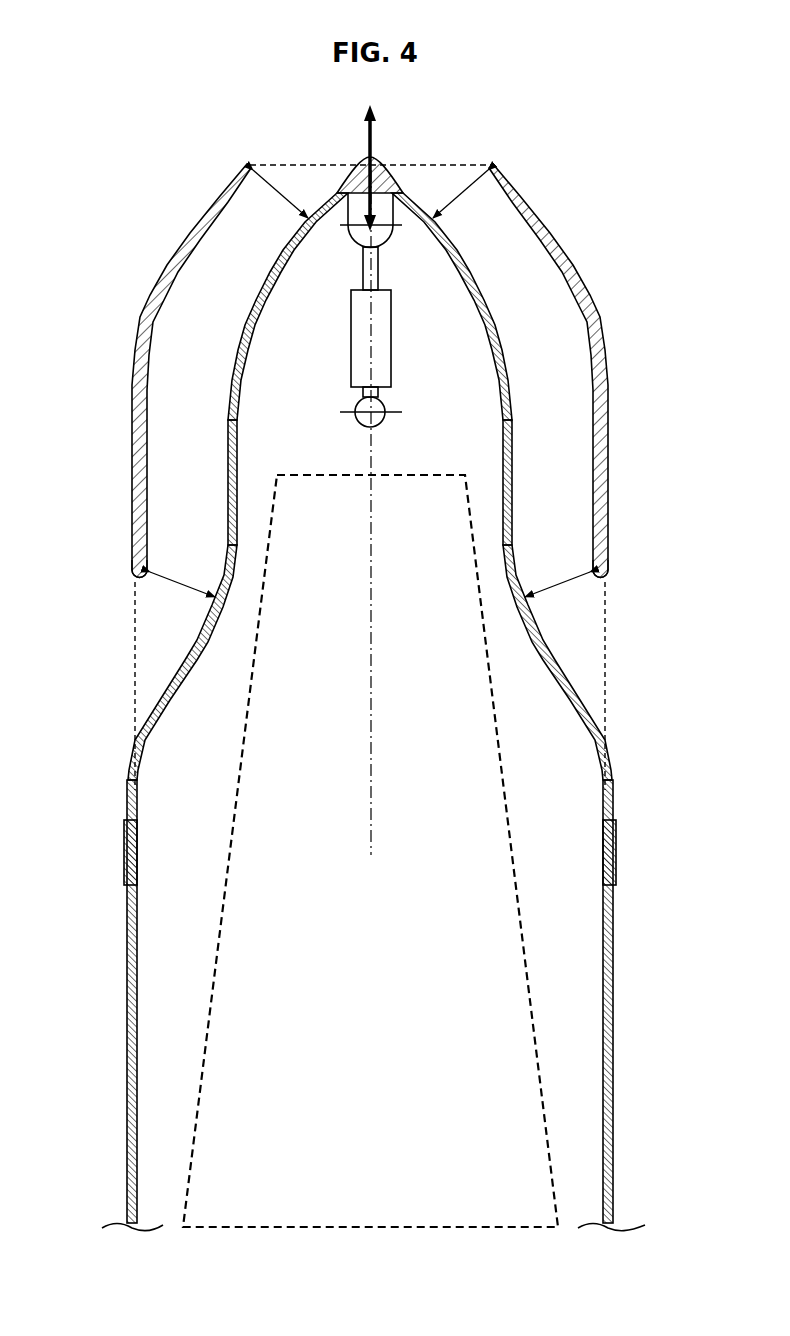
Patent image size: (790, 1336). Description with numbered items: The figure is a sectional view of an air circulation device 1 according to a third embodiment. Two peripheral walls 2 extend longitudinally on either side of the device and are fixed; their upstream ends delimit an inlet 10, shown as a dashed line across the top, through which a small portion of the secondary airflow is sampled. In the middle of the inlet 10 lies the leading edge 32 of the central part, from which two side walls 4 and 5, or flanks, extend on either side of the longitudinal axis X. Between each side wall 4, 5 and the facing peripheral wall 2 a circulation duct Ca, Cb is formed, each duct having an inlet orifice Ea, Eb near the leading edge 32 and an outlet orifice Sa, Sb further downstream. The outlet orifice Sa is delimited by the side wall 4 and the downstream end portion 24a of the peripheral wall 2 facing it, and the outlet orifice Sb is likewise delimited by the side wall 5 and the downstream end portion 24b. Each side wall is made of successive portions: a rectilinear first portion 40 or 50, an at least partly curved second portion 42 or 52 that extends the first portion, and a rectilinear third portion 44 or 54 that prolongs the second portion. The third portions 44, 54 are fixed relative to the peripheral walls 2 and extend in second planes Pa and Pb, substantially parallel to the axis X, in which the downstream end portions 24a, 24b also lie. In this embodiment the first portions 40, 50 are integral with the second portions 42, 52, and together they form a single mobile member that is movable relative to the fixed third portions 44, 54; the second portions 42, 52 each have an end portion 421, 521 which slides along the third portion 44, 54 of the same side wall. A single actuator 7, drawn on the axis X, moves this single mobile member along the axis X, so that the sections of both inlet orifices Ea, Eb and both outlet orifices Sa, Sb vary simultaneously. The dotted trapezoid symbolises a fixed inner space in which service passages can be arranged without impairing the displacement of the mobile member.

The air circulation device 1 is at (612, 221).
The peripheral wall 2 is at (173, 283).
The side wall 4 is at (265, 302).
The side wall 5 is at (475, 302).
The actuator 7 is at (350, 368).
The inlet 10 is at (452, 165).
The leading edge 32 is at (383, 178).
The first portion 40 is at (237, 505).
The first portion 50 is at (503, 505).
The second portion 42 is at (167, 703).
The second portion 52 is at (573, 703).
The third portion 44 is at (127, 1062).
The third portion 54 is at (613, 1062).
The end portion 421 is at (127, 800).
The end portion 521 is at (614, 800).
The downstream end portion 24a is at (132, 578).
The downstream end portion 24b is at (610, 578).
The circulation duct Ca is at (204, 395).
The circulation duct Cb is at (567, 395).
The inlet orifice Ea is at (278, 198).
The inlet orifice Eb is at (463, 198).
The outlet orifice Sa is at (182, 576).
The outlet orifice Sb is at (557, 576).
The second plane Pa is at (133, 660).
The second plane Pb is at (608, 660).
The longitudinal axis X is at (372, 730).